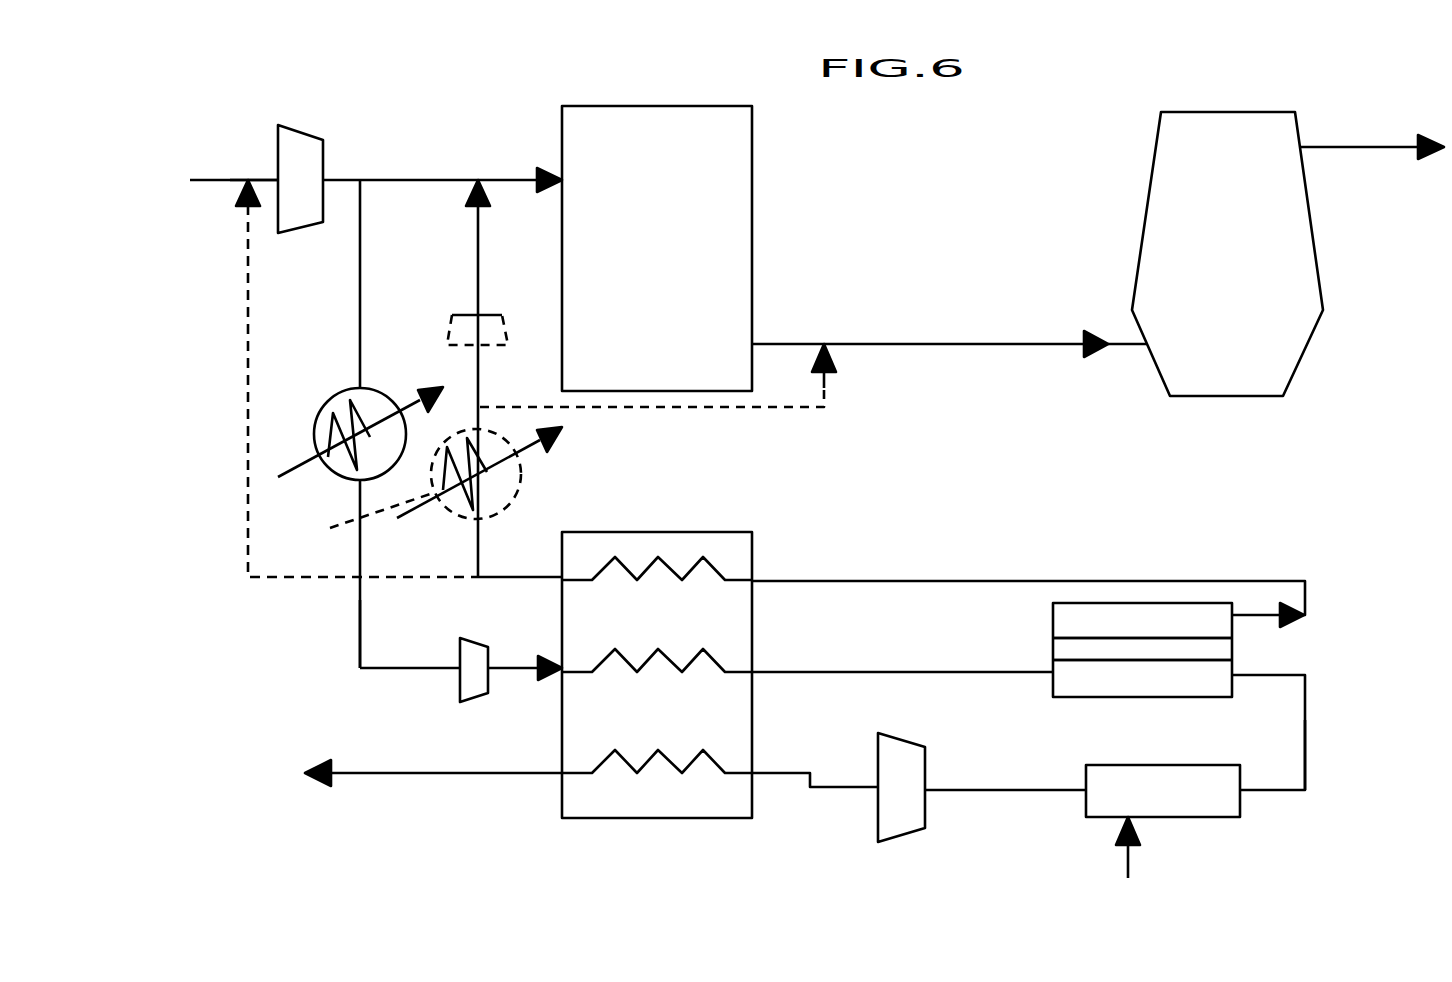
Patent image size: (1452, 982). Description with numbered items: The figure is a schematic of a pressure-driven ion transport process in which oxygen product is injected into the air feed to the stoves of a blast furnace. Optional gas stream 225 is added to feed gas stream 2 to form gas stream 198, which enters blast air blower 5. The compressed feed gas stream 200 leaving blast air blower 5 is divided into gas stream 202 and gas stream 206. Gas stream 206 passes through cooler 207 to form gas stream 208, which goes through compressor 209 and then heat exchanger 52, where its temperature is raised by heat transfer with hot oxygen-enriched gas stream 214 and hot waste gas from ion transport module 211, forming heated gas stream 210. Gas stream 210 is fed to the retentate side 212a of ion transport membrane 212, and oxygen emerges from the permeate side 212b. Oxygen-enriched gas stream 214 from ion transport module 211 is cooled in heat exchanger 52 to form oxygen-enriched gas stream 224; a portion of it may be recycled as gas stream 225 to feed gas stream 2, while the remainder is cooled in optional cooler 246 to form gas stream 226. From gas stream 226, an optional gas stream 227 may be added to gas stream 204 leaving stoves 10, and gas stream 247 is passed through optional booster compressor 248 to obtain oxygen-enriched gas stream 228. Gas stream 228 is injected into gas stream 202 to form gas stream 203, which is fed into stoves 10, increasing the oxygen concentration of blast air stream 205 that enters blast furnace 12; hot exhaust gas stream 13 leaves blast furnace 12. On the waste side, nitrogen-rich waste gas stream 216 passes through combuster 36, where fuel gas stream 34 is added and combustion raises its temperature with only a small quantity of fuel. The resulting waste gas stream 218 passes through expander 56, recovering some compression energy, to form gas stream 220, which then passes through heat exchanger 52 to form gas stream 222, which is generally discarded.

The feed gas stream 2 is at (227, 182).
The gas stream 198 is at (268, 180).
The blast air blower 5 is at (313, 132).
The compressed feed gas stream 200 is at (340, 180).
The gas stream 202 is at (438, 180).
The gas stream 203 is at (508, 180).
The stoves 10 is at (760, 178).
The gas stream 204 is at (797, 338).
The gas stream 205 is at (968, 340).
The blast furnace 12 is at (1152, 160).
The hot exhaust gas stream 13 is at (1380, 140).
The gas stream 206 is at (360, 280).
The oxygen-enriched gas stream 228 is at (477, 248).
The optional booster compressor 248 is at (452, 315).
The cooler 207 is at (317, 413).
The gas stream 226 is at (473, 415).
The gas stream 247 is at (478, 377).
The gas stream 227 is at (700, 405).
The optional cooler 246 is at (352, 525).
The gas stream 225 is at (248, 510).
The oxygen-enriched gas stream 224 is at (532, 580).
The gas stream 208 is at (359, 613).
The compressor 209 is at (477, 700).
The gas stream 222 is at (440, 773).
The heat exchanger 52 is at (700, 820).
The heated gas stream 210 is at (842, 665).
The ion transport module 211 is at (1053, 613).
The oxygen-enriched gas stream 214 is at (1305, 600).
The ion transport membrane 212 is at (1235, 655).
The retentate side 212a is at (1085, 660).
The permeate side 212b is at (1200, 640).
The nitrogen-rich waste gas stream 216 is at (1305, 768).
The gas stream 220 is at (787, 770).
The expander 56 is at (903, 835).
The waste gas stream 218 is at (1038, 792).
The combuster 36 is at (1107, 817).
The fuel gas stream 34 is at (1128, 865).